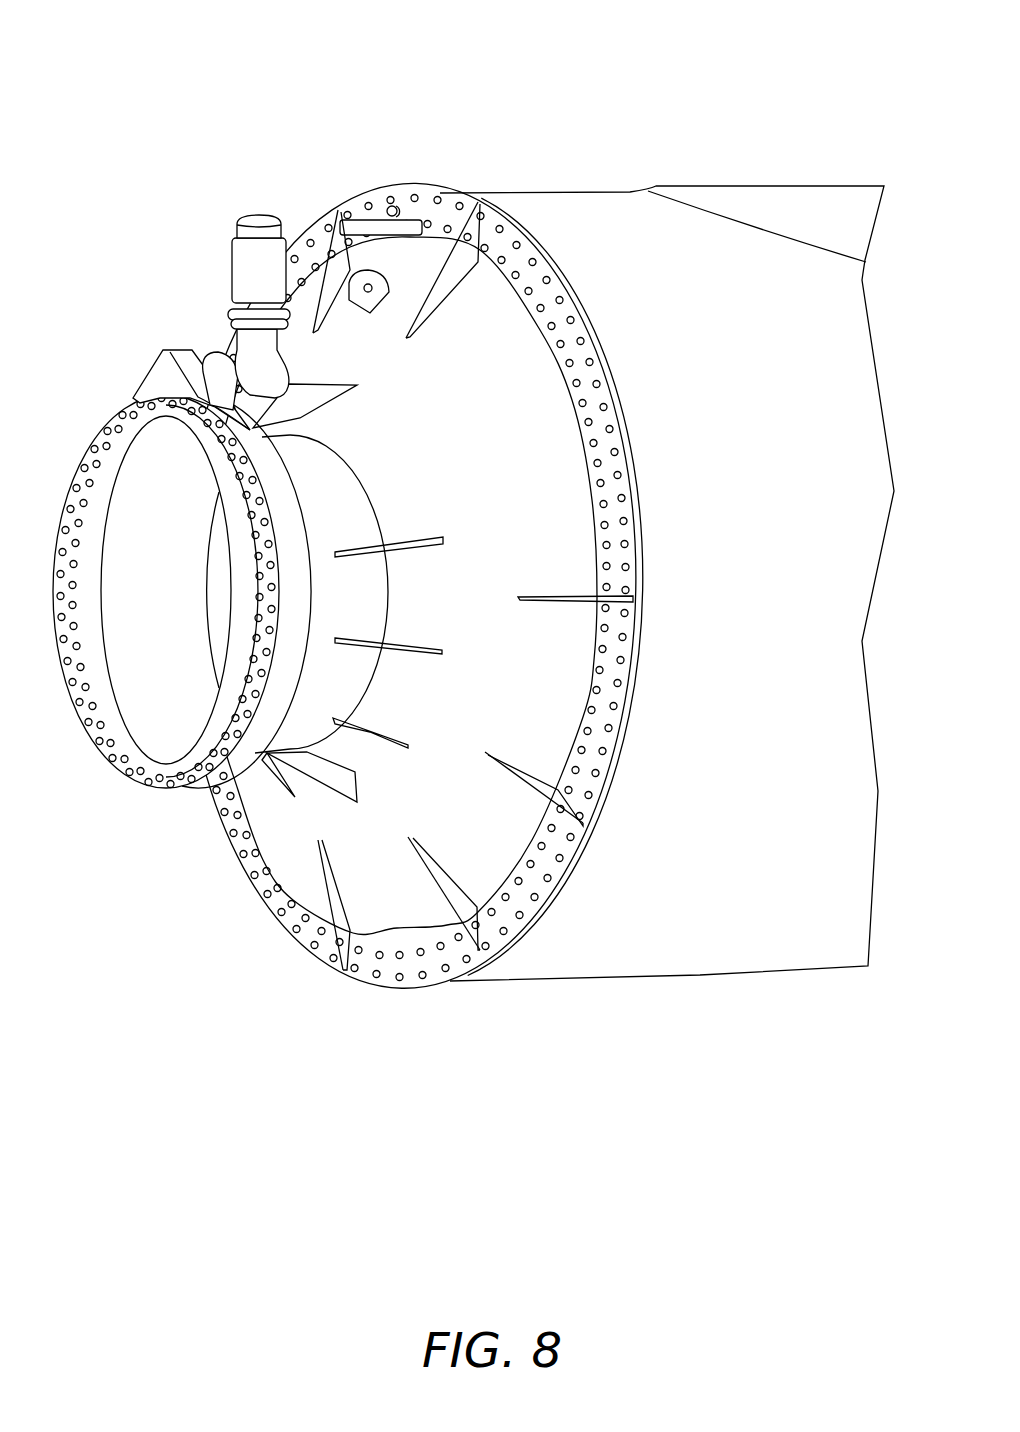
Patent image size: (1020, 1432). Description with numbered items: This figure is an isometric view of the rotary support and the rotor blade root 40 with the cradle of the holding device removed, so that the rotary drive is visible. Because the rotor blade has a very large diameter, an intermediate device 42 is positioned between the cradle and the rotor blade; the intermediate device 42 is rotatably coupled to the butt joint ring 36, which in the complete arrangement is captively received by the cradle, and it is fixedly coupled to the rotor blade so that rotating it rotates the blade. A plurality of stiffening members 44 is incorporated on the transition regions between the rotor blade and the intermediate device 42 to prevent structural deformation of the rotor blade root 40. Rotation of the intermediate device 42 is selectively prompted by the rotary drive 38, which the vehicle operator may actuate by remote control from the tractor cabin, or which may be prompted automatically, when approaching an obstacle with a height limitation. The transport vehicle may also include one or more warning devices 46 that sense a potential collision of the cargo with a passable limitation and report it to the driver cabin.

The butt joint ring 36 is at (90, 502).
The rotary drive 38 is at (232, 356).
The rotor blade root 40 is at (473, 503).
The intermediate device 42 is at (345, 682).
The stiffening members 44 is at (452, 892).
The warning devices 46 is at (383, 202).